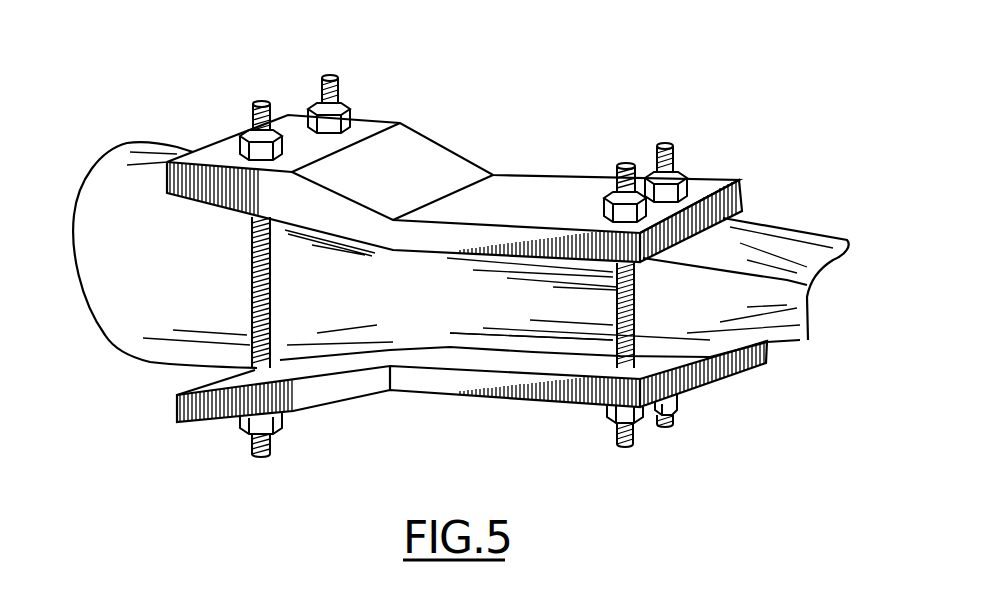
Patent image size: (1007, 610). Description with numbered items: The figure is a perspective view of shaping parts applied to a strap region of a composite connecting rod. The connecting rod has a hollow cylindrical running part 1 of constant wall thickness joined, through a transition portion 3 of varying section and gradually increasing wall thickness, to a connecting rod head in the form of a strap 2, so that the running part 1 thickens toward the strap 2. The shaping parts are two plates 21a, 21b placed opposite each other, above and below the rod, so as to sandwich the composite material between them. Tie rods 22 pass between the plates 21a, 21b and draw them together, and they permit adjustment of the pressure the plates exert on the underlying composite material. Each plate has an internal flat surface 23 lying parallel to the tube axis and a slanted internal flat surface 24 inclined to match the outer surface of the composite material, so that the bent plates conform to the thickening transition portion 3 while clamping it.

The running part 1 is at (147, 373).
The strap 2 is at (797, 343).
The transition portion 3 is at (453, 280).
The plate 21a is at (432, 378).
The plate 21b is at (418, 168).
The tie rods 22 is at (327, 75).
The internal flat surface 23 is at (550, 362).
The slanted internal flat surface 24 is at (310, 365).